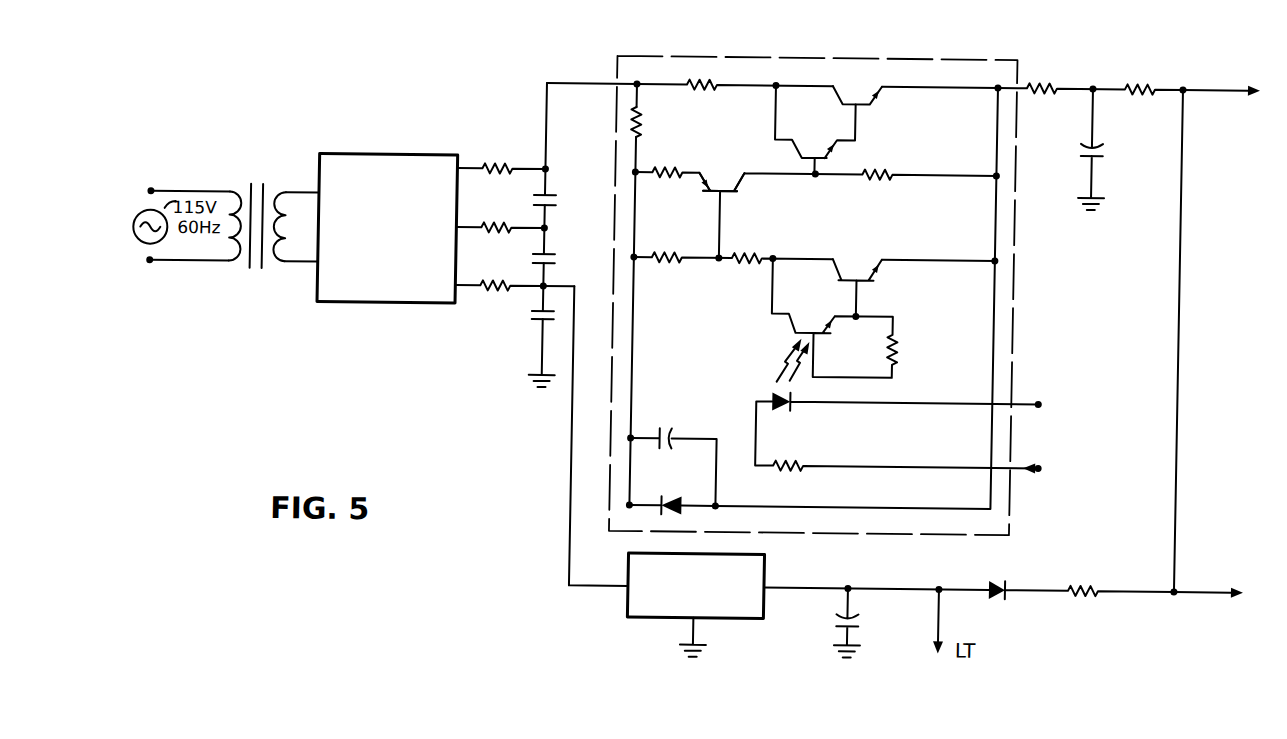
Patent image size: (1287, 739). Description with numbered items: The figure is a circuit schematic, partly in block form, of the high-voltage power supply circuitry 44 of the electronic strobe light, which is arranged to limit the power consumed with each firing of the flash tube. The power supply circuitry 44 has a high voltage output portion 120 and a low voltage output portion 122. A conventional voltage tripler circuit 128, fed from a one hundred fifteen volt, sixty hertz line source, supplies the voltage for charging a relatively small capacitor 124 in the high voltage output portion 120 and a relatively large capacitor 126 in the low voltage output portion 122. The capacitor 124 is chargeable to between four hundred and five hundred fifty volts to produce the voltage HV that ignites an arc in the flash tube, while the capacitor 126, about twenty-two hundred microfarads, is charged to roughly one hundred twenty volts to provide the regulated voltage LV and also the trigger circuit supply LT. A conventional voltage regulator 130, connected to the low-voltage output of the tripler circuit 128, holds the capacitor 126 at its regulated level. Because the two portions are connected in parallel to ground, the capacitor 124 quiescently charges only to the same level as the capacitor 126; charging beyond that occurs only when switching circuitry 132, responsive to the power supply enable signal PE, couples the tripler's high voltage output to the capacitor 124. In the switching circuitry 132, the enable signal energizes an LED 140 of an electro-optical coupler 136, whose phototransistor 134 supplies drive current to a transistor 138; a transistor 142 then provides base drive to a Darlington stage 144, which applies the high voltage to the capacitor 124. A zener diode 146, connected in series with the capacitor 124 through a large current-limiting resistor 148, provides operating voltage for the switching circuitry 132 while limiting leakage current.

The power supply circuitry 44 is at (1080, 40).
The high voltage output portion 120 is at (1206, 76).
The low voltage output portion 122 is at (1209, 594).
The capacitor 124 is at (1105, 140).
The capacitor 126 is at (869, 613).
The voltage tripler circuit 128 is at (429, 150).
The voltage regulator 130 is at (773, 558).
The switching circuitry 132 is at (1030, 259).
The phototransistor 134 is at (798, 316).
The electro-optical coupler 136 is at (775, 342).
The transistor 138 is at (850, 262).
The LED 140 is at (790, 404).
The transistor 142 is at (742, 178).
The Darlington stage 144 is at (833, 153).
The zener diode 146 is at (680, 490).
The resistor 148 is at (641, 122).